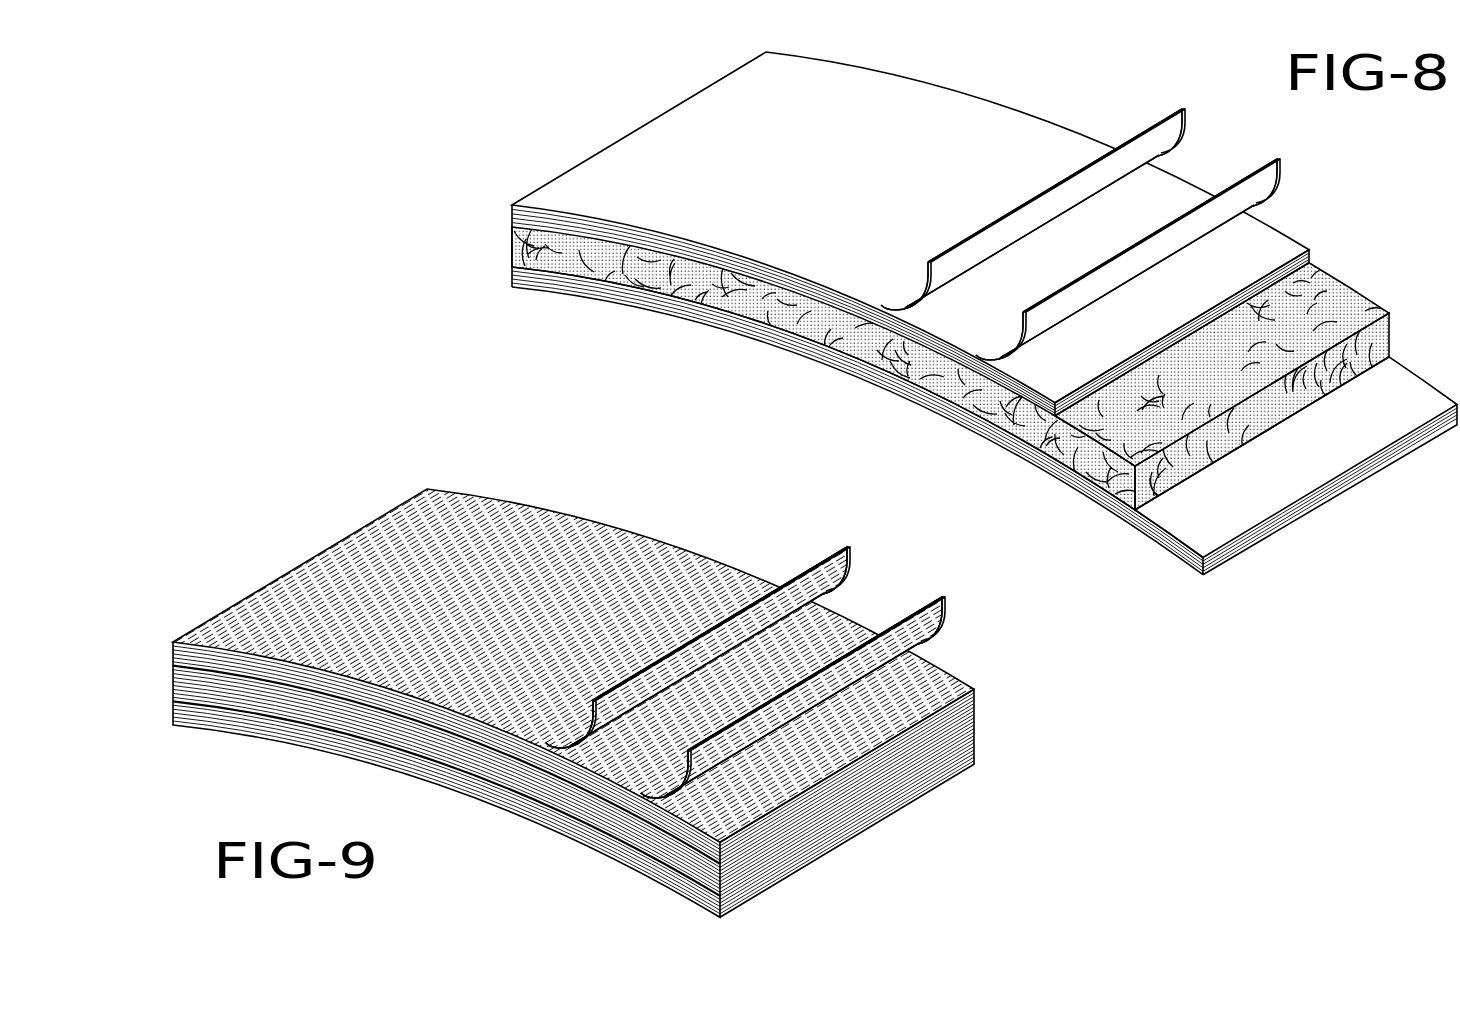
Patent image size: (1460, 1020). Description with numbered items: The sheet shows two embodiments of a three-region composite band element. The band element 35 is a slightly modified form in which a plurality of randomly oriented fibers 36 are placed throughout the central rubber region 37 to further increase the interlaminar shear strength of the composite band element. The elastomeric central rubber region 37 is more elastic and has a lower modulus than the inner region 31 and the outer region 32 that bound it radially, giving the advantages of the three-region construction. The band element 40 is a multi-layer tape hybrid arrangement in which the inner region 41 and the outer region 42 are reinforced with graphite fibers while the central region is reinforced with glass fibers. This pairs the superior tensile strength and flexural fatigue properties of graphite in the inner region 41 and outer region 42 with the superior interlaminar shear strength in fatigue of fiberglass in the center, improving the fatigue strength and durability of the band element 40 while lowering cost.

In FIG. 8, the inner region 31 is at (972, 326).
In FIG. 8, the outer region 32 is at (690, 132).
In FIG. 8, the band element 35 is at (1314, 532).
In FIG. 8, the randomly oriented fibers 36 is at (922, 374).
In FIG. 8, the central rubber region 37 is at (1360, 290).
In FIG. 9, the band element 40 is at (591, 699).
In FIG. 9, the inner region 41 is at (263, 738).
In FIG. 9, the outer region 42 is at (378, 552).